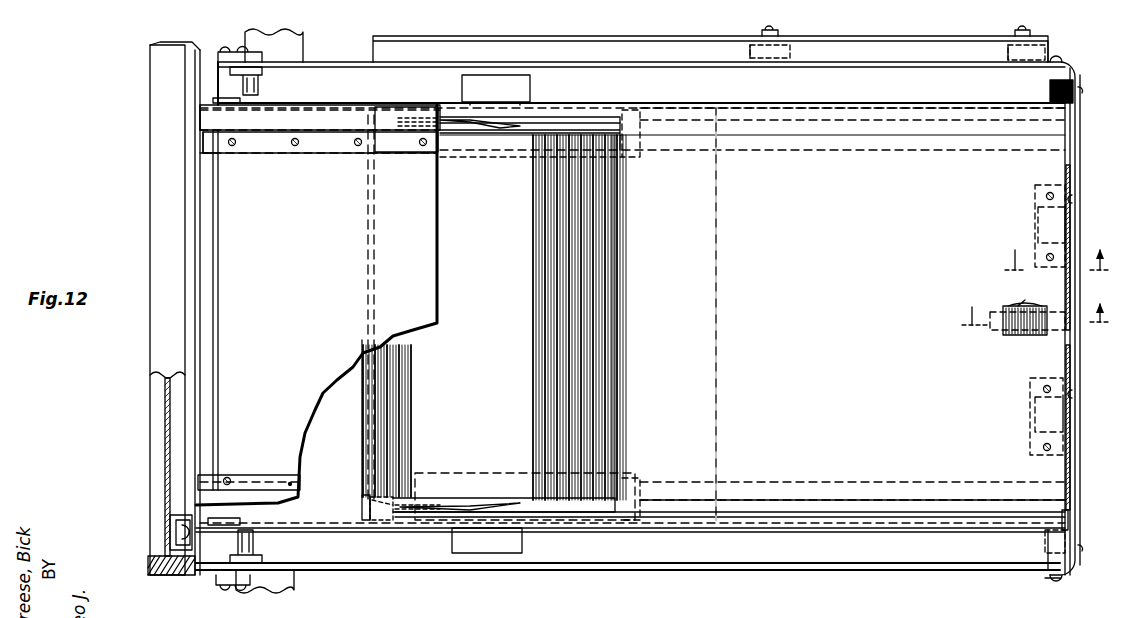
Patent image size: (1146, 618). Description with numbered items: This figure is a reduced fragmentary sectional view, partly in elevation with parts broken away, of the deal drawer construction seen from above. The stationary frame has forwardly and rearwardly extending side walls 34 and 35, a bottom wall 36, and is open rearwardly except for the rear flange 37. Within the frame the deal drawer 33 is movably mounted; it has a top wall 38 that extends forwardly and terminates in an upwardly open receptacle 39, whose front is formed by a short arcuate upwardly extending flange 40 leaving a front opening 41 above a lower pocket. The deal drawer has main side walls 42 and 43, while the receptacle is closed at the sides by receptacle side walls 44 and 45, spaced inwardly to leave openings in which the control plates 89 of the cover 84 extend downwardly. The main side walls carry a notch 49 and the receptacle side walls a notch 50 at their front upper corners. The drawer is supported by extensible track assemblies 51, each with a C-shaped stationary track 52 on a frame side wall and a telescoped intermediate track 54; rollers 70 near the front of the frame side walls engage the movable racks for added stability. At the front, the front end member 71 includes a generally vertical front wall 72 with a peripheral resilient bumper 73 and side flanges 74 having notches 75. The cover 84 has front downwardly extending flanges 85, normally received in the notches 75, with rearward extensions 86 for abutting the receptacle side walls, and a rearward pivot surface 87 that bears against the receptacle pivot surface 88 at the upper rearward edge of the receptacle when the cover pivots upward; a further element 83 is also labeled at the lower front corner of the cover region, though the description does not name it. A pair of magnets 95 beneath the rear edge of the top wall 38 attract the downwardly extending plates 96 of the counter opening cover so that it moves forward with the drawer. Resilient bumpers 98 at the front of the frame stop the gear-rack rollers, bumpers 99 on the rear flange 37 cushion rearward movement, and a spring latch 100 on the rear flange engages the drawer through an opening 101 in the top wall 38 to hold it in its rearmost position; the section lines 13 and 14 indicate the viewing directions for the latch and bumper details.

The section line 13— 13 is at (1037, 327).
The section line 14— 14 is at (1058, 272).
The deal drawer 33 is at (1054, 148).
The stationary frame side wall 34 is at (566, 570).
The stationary frame side wall 35 is at (585, 63).
The bottom wall 36 is at (322, 77).
The rear flange 37 is at (1075, 522).
The top wall 38 is at (769, 314).
The receptacle 39 is at (565, 380).
The arcuate upwardly extending flange 40 is at (362, 426).
The front opening 41 is at (362, 453).
The deal drawer side wall 42 is at (418, 520).
The deal drawer side wall 43 is at (457, 105).
The receptacle side wall 44 is at (457, 497).
The receptacle side wall 45 is at (503, 135).
The notch 49 is at (368, 520).
The notch 50 is at (362, 500).
The extensible track assembly 51 is at (812, 84).
The stationary track 52 is at (880, 76).
The intermediate track 54 is at (483, 85).
The roller 70 is at (258, 81).
The front end member 71 is at (150, 236).
The front wall 72 is at (165, 400).
The peripheral resilient bumper 73 is at (158, 578).
The side flange 74 is at (330, 106).
The notch 75 is at (185, 510).
The lower bracket 83 is at (268, 496).
The cover 84 is at (320, 302).
The front downwardly extending flange 85 is at (200, 118).
The rearward extension 86 is at (208, 142).
The rearward pivot surface 87 is at (440, 272).
The receptacle pivot surface 88 is at (613, 318).
The control plate 89 is at (455, 120).
The magnet 95 is at (1035, 231).
The downwardly extending plate 96 is at (1068, 172).
The resilient bumper 98 is at (233, 72).
The bumper 99 is at (1068, 200).
The spring latch 100 is at (1012, 332).
The opening 101 is at (1015, 304).